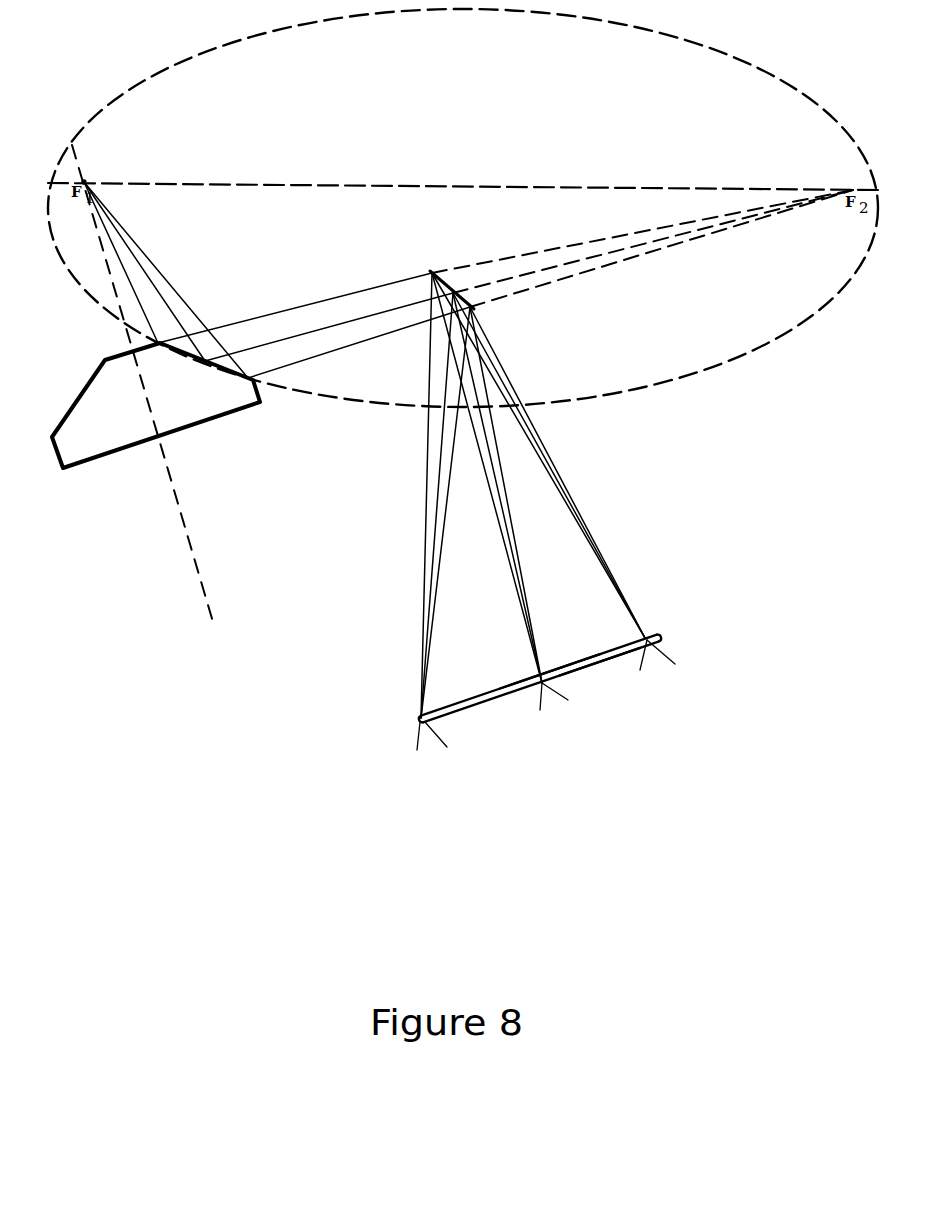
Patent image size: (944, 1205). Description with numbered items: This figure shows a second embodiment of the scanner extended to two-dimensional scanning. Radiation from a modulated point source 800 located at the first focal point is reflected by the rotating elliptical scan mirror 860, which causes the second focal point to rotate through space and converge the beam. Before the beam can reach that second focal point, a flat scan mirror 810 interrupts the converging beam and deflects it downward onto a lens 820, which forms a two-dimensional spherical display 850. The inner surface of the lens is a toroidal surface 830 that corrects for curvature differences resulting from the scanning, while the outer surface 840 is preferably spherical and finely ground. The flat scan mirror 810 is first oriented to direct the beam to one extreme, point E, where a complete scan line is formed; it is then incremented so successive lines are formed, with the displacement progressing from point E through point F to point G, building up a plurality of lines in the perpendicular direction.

The modulated point source 800 is at (92, 171).
The flat scan mirror 810 is at (432, 264).
The lens 820 is at (563, 688).
The toroidal surface 830 is at (573, 653).
The outer surface 840 is at (604, 676).
The two-dimensional spherical display 850 is at (538, 733).
The elliptical scan mirror 860 is at (235, 430).